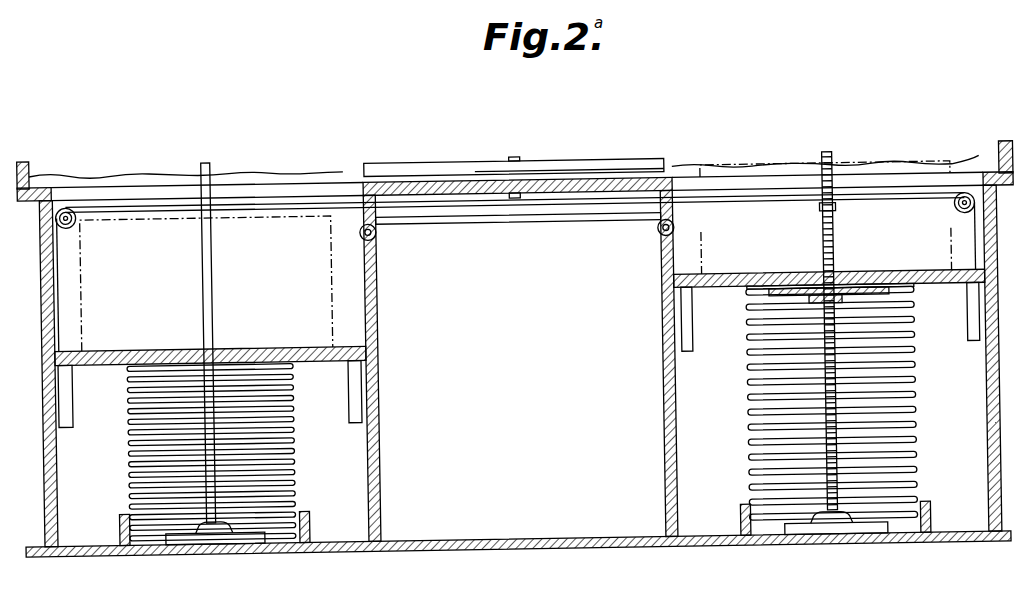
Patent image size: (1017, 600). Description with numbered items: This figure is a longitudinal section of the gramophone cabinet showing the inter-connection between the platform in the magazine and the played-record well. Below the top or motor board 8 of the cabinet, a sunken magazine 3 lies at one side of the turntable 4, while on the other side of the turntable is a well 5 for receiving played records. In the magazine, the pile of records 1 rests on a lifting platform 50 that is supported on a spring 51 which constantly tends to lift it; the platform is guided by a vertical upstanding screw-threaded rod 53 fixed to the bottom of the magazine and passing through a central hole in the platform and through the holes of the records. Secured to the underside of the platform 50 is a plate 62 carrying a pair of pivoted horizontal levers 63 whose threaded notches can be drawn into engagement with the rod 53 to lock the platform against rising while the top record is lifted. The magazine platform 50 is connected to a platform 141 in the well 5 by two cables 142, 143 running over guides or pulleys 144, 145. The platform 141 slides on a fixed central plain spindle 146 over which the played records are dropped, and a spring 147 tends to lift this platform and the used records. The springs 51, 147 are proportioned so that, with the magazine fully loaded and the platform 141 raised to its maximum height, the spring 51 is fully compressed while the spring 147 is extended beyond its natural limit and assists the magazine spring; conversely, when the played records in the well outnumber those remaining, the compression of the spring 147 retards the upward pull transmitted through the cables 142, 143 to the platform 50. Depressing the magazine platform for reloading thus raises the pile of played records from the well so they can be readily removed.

The record 1 is at (243, 213).
The magazine 3 is at (692, 416).
The turntable 4 is at (577, 161).
The well 5 is at (357, 460).
The top or motor board 8 is at (368, 182).
The lifting platform 50 is at (740, 277).
The spring 51 is at (912, 384).
The screw-threaded rod 53 is at (838, 214).
The plate 62 is at (907, 277).
The horizontal levers 63 is at (811, 266).
The platform 141 is at (151, 331).
The cable 142 is at (571, 222).
The cable 143 is at (478, 206).
The guides or pulleys 144 is at (378, 235).
The guides or pulleys 145 is at (74, 204).
The central plain spindle 146 is at (204, 267).
The spring 147 is at (293, 443).